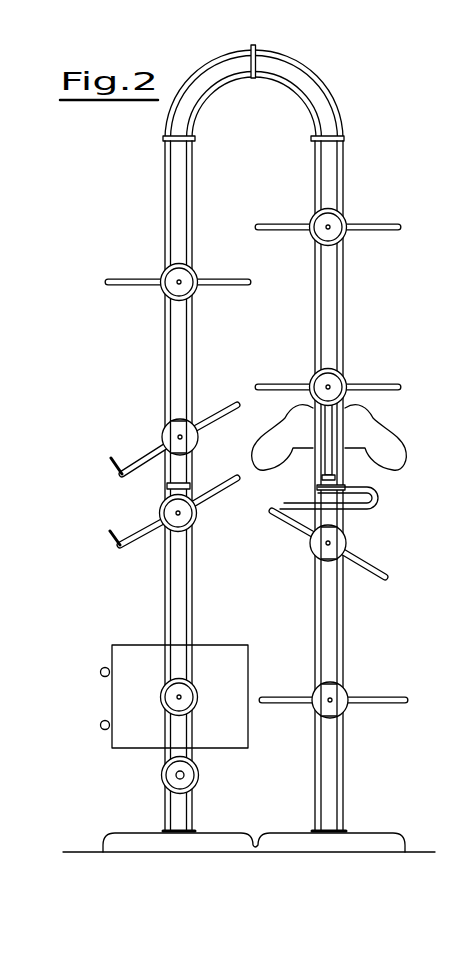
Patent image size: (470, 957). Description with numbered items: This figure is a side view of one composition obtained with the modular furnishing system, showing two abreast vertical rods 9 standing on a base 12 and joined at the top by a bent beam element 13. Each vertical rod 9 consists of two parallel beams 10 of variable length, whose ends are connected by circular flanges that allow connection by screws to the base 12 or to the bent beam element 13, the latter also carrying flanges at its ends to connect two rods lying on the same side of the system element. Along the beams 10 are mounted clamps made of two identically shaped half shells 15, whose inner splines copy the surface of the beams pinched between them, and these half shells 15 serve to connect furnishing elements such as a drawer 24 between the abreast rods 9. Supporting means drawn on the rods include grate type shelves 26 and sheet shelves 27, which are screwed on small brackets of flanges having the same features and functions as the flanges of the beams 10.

The vertical rod 9 is at (145, 368).
The parallel beam 10 is at (318, 623).
The base 12 is at (367, 838).
The bent beam element 13 is at (377, 47).
The half shell 15 is at (332, 227).
The drawer 24 is at (125, 662).
The grate type shelf 26 is at (222, 410).
The sheet shelf 27 is at (131, 280).